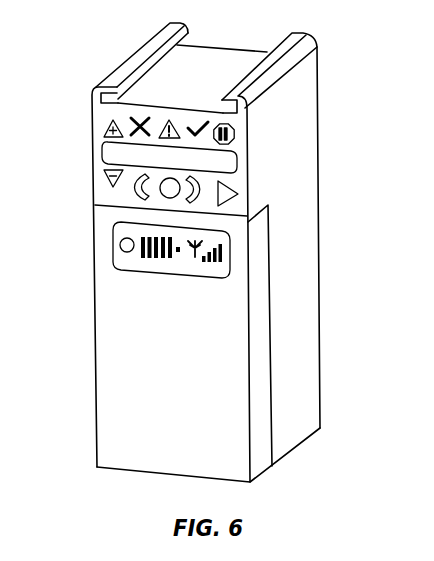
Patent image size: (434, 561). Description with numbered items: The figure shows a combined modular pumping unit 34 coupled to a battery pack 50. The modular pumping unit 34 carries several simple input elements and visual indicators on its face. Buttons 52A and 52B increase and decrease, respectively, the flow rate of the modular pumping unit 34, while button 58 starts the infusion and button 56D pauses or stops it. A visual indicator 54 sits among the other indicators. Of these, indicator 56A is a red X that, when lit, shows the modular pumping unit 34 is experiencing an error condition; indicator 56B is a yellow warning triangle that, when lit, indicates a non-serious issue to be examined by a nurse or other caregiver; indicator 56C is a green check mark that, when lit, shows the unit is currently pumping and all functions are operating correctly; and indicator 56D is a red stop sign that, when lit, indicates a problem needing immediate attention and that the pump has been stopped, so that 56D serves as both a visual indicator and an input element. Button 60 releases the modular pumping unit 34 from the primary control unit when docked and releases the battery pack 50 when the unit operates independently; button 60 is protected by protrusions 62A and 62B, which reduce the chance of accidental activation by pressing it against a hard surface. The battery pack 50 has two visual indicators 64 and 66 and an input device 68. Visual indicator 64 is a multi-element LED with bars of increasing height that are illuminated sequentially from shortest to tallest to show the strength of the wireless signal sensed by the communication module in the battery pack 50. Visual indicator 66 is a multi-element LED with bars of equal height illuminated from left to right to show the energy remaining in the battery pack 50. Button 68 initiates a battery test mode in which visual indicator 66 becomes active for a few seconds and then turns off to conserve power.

The modular pumping unit 34 is at (315, 77).
The battery pack 50 is at (107, 330).
The button 52A is at (107, 125).
The button 52B is at (105, 177).
The visual indicator 54 is at (100, 150).
The indicator 56A is at (168, 128).
The indicator 56B is at (140, 126).
The indicator 56C is at (202, 128).
The indicator 56D is at (242, 126).
The button 58 is at (222, 198).
The button 60 is at (178, 181).
The protrusion 62A is at (133, 190).
The protrusion 62B is at (205, 183).
The visual indicator 64 is at (220, 262).
The visual indicator 66 is at (160, 258).
The button 68 is at (113, 245).